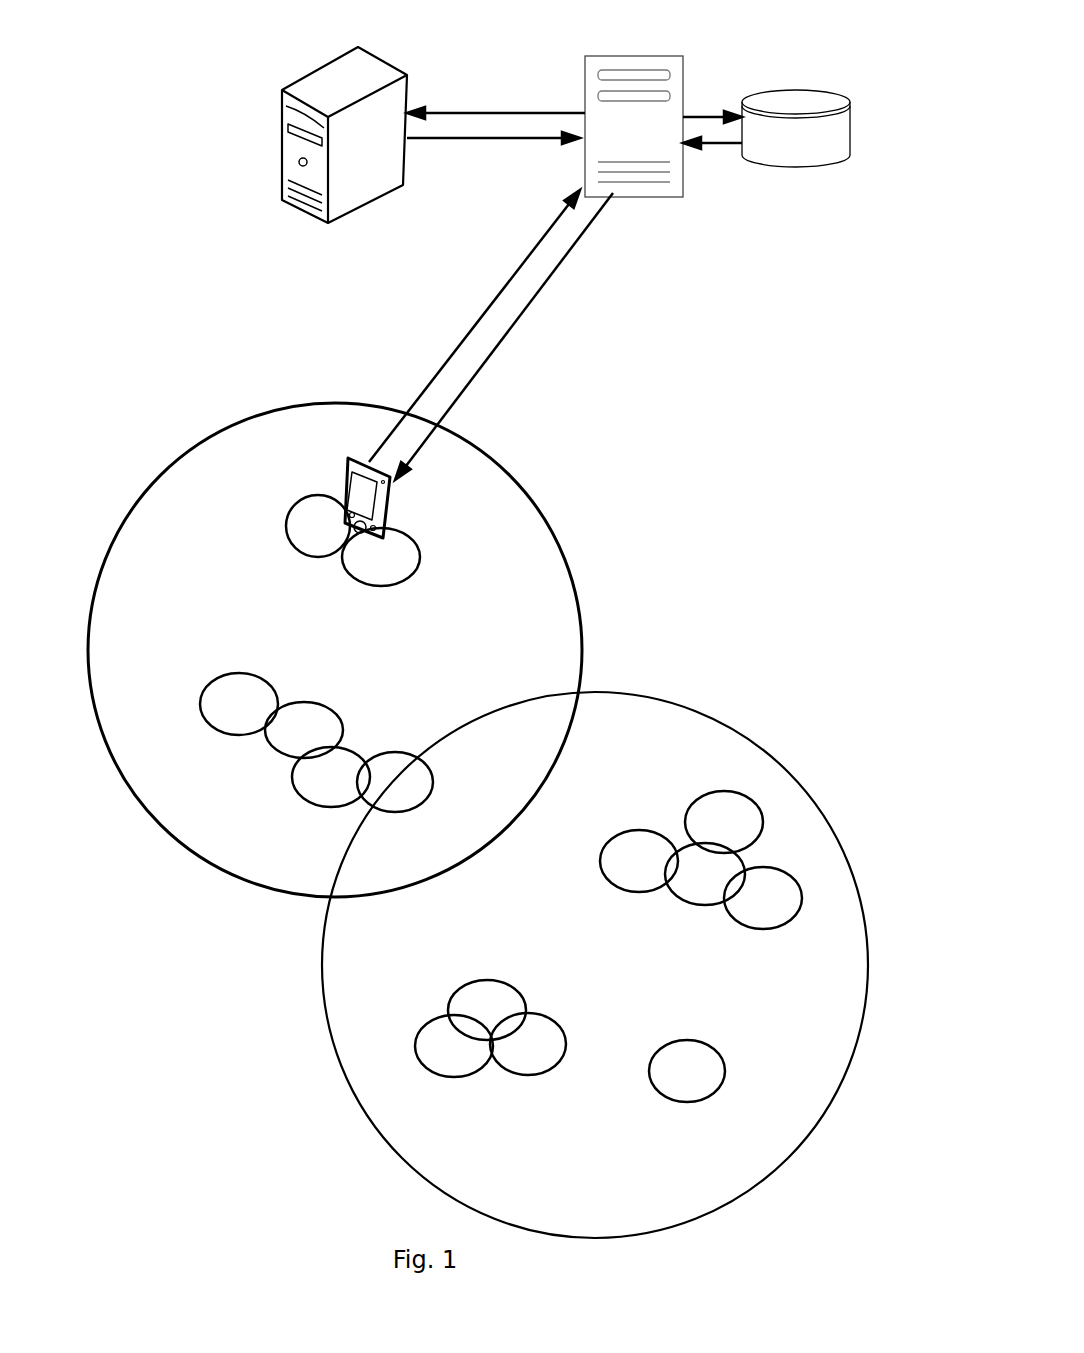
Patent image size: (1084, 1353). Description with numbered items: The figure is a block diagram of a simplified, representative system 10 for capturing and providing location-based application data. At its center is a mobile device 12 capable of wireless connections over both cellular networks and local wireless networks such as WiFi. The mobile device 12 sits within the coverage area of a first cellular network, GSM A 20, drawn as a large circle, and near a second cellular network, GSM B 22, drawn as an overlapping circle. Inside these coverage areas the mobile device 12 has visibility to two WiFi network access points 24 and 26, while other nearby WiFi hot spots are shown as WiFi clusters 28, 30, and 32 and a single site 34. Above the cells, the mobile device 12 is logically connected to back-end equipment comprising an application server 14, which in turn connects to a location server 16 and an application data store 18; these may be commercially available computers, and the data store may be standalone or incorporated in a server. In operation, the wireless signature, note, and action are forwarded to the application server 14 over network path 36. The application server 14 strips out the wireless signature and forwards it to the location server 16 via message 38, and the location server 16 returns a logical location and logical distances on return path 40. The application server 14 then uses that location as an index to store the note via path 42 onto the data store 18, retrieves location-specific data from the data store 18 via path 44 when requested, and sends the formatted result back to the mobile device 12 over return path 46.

The system 10 is at (259, 1104).
The mobile device 12 is at (347, 477).
The application server 14 is at (628, 56).
The location server 16 is at (277, 173).
The application data store 18 is at (810, 88).
The GSM A 20 is at (570, 558).
The GSM B 22 is at (753, 740).
The WiFi network access point 24 is at (285, 513).
The WiFi network access point 26 is at (422, 560).
The WiFi cluster 28 is at (259, 787).
The WiFi cluster 30 is at (657, 793).
The WiFi cluster 32 is at (419, 1002).
The single site 34 is at (725, 1068).
The network path 36 is at (443, 362).
The message 38 is at (465, 112).
The return path 40 is at (510, 145).
The path 42 is at (697, 112).
The path 44 is at (712, 148).
The return path 46 is at (540, 297).